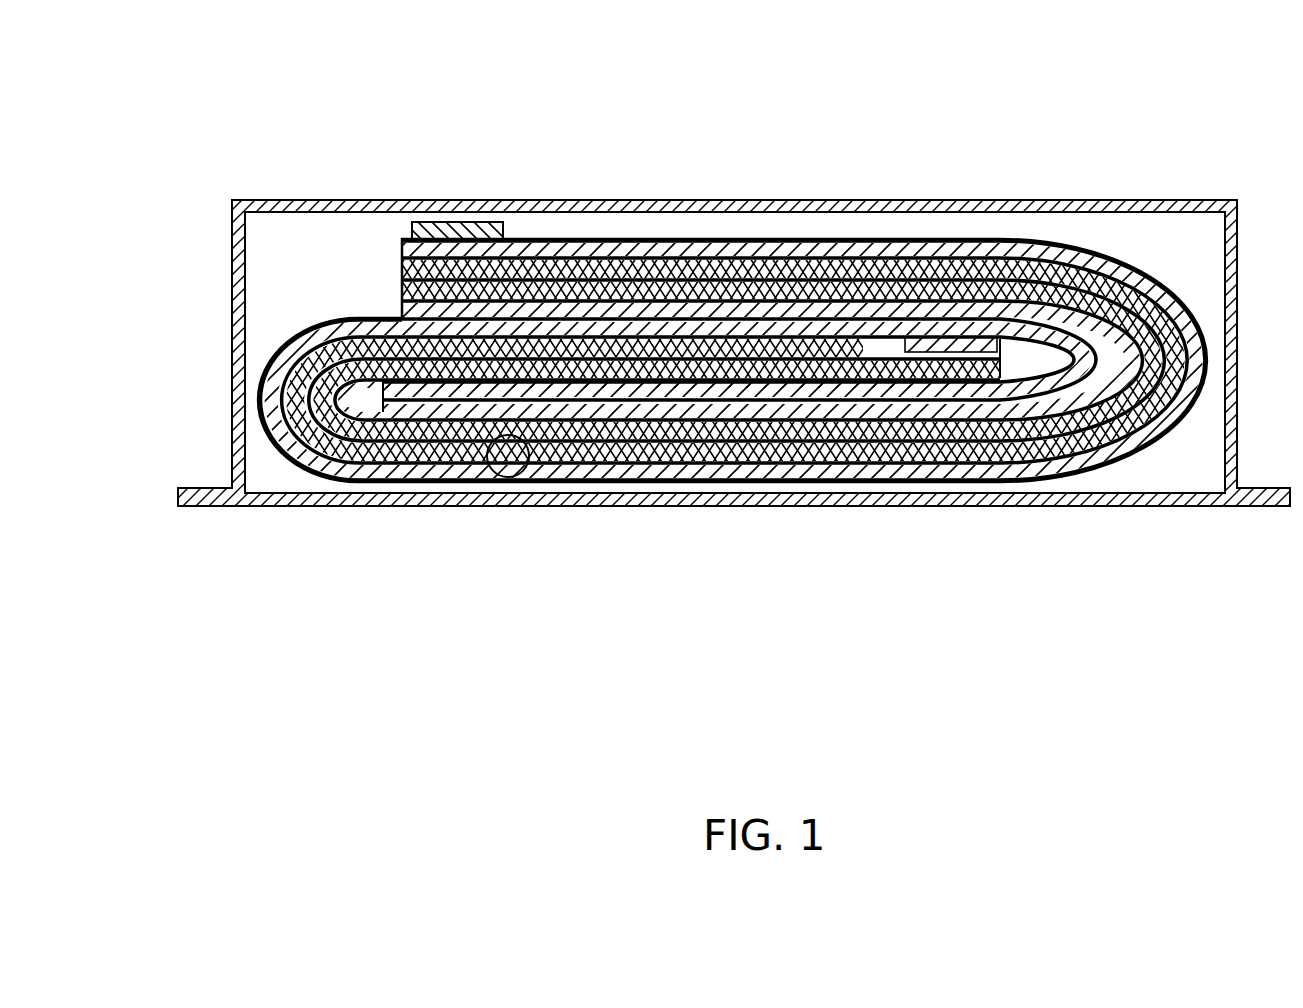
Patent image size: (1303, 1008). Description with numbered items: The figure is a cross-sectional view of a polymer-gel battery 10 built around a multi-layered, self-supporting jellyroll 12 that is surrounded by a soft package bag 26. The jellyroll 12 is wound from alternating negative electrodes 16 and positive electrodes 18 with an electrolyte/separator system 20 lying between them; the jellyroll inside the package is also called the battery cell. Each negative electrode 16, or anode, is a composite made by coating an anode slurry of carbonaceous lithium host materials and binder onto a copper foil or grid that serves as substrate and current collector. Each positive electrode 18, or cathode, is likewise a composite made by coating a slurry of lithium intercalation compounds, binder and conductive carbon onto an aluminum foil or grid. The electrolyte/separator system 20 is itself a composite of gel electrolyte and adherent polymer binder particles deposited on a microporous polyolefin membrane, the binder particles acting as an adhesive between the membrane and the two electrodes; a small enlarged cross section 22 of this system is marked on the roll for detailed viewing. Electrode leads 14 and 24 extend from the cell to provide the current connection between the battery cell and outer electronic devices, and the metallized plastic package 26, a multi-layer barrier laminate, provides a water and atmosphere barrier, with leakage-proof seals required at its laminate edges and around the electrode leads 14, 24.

The battery 10 is at (707, 356).
The jellyroll 12 is at (350, 290).
The electrode lead 14 is at (470, 240).
The negative electrode 16 is at (687, 242).
The positive electrode 18 is at (908, 265).
The electrolyte/separator system 20 is at (732, 356).
The enlarged cross section 22 is at (487, 477).
The electrode lead 24 is at (968, 342).
The soft package bag 26 is at (1120, 503).